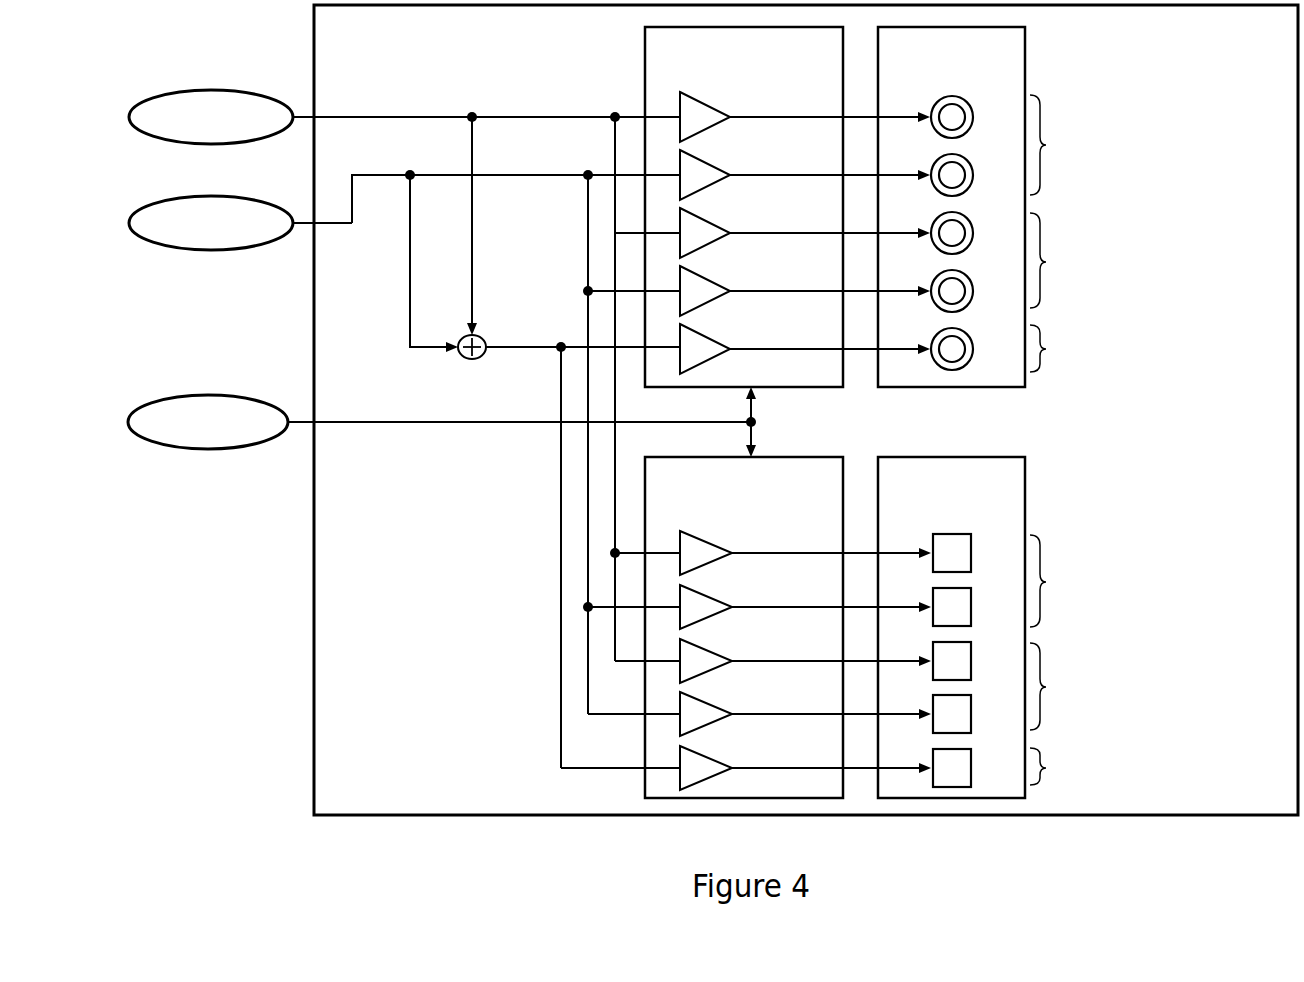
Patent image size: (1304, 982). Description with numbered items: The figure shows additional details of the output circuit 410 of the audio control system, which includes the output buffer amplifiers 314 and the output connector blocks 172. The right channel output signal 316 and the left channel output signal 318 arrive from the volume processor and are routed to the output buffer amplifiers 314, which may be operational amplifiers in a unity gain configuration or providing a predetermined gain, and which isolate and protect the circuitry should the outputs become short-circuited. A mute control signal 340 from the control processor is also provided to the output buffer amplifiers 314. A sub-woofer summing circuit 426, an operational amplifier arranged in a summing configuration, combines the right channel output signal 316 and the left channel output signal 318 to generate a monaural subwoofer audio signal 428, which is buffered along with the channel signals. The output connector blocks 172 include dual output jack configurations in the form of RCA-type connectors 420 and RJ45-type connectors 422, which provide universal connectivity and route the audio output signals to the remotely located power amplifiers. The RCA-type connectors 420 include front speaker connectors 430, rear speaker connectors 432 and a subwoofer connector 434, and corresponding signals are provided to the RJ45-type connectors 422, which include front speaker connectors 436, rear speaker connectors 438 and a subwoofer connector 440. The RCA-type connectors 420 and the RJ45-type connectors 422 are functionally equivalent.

The output circuit 410 is at (528, 37).
The right channel output signal 316 is at (183, 90).
The left channel output signal 318 is at (183, 197).
The mute control signal 340 is at (181, 395).
The output buffer amplifiers 314 is at (824, 56).
The RCA-type connectors 420 is at (1004, 56).
The RJ45-type connectors 422 is at (1004, 486).
The output connector blocks 172 is at (977, 412).
The sub-woofer summing circuit 426 is at (481, 337).
The monaural subwoofer audio signal 428 is at (560, 378).
The front speaker connectors 430 is at (1239, 157).
The rear speaker connectors 432 is at (1239, 274).
The subwoofer connector 434 is at (1213, 362).
The front speaker connectors 436 is at (1239, 594).
The rear speaker connectors 438 is at (1239, 699).
The subwoofer connector 440 is at (1213, 780).